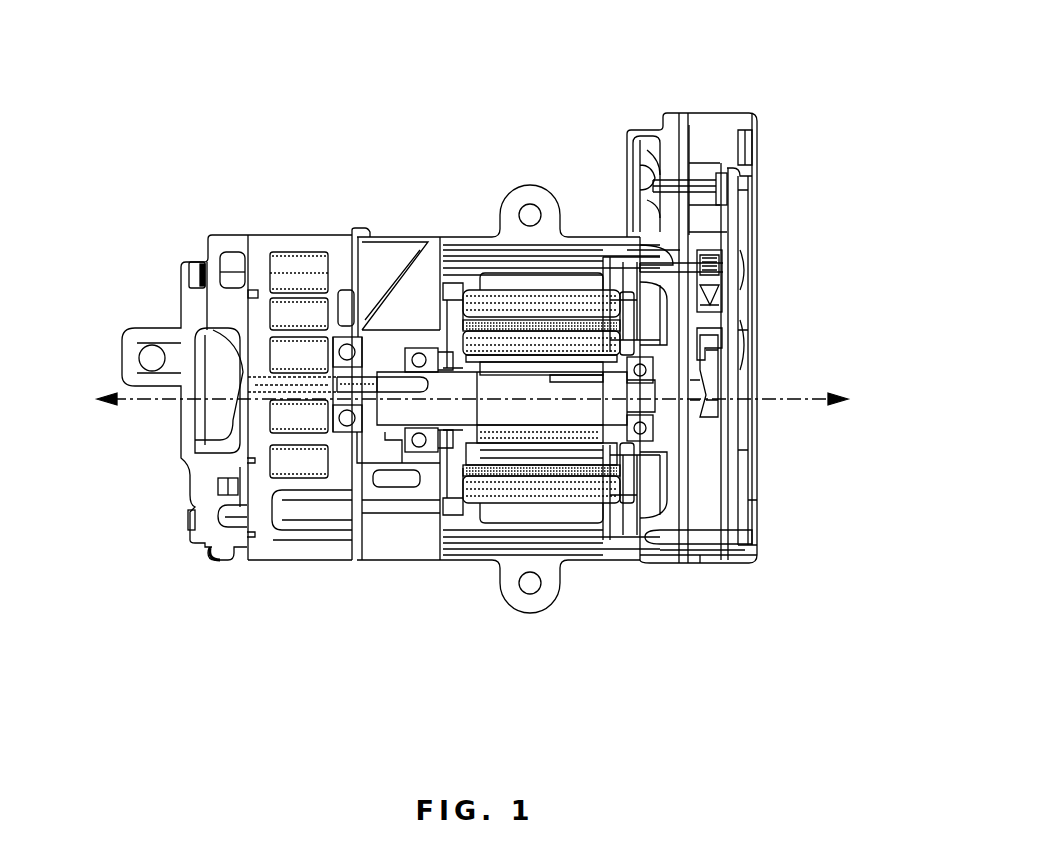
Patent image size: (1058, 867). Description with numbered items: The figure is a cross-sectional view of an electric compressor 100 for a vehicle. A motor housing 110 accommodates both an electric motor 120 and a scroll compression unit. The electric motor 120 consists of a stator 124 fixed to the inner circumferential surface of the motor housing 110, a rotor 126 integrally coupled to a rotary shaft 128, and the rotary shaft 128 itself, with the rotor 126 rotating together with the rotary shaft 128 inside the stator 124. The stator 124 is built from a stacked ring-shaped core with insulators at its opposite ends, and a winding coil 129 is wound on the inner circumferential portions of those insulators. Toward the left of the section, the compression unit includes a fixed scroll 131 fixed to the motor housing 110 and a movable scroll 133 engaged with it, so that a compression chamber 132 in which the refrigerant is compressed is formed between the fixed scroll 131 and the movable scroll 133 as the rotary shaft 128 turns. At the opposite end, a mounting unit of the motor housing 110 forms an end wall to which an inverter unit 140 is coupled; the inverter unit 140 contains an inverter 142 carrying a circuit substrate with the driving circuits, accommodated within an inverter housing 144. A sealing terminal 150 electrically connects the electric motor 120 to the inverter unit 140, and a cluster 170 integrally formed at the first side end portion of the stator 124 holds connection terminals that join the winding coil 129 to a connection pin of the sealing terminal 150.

The electric compressor 100 is at (291, 220).
The motor housing 110 is at (457, 238).
The electric motor 120 is at (612, 662).
The stator 124 is at (533, 517).
The rotor 126 is at (577, 444).
The rotary shaft 128 is at (413, 412).
The winding coil 129 is at (520, 310).
The fixed scroll 131 is at (298, 482).
The compression chamber 132 is at (307, 316).
The movable scroll 133 is at (307, 452).
The inverter unit 140 is at (744, 96).
The inverter 142 is at (713, 247).
The inverter housing 144 is at (753, 450).
The sealing terminal 150 is at (688, 250).
The cluster 170 is at (621, 264).